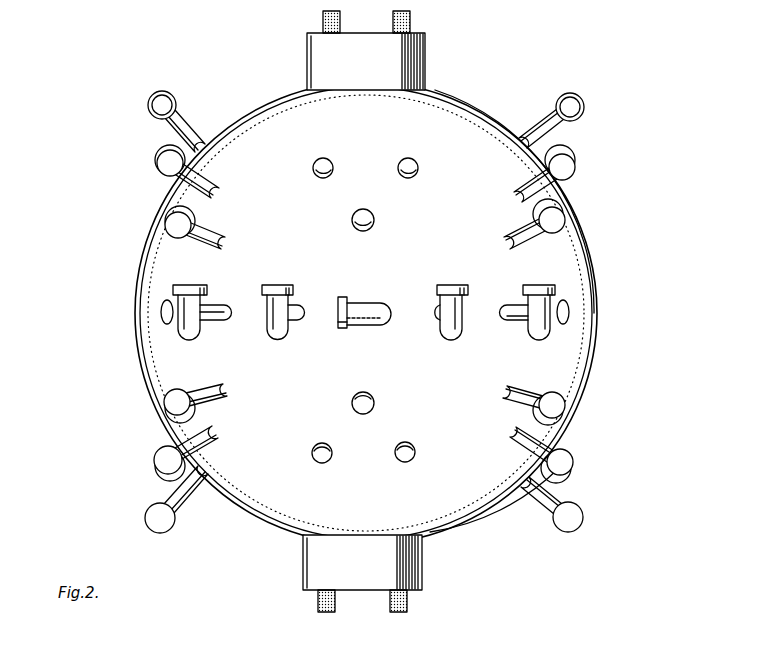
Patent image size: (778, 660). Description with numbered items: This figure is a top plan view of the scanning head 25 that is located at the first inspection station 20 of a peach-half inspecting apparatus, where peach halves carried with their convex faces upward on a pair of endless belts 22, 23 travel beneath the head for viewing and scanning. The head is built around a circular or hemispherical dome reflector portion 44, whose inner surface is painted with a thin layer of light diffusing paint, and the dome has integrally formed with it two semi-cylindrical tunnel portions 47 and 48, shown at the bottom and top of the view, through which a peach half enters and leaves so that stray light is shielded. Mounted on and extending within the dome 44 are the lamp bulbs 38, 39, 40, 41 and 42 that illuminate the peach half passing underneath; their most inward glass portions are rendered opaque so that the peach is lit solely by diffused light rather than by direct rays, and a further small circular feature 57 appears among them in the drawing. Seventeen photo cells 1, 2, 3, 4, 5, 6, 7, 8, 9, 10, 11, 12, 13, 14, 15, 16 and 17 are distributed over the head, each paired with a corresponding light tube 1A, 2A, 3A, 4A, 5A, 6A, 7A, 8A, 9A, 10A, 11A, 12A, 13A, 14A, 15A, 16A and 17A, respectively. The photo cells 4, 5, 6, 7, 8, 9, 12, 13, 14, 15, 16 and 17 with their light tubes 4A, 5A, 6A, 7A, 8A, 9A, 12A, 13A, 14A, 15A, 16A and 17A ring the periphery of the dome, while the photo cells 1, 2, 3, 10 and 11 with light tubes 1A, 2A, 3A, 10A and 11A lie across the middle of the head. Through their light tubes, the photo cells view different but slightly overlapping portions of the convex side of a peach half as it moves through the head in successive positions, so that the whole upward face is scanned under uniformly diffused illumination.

The inspection station 20 is at (392, 327).
The scanning head 25 is at (608, 275).
The dome reflector portion 44 is at (468, 512).
The semi-cylindrical tunnel portion 48 is at (412, 60).
The semi-cylindrical tunnel portion 47 is at (408, 565).
The endless belt 22 is at (328, 614).
The endless belt 23 is at (399, 614).
The lamp bulb 38 is at (326, 160).
The hole 57 is at (412, 164).
The lamp bulb 39 is at (368, 220).
The lamp bulb 40 is at (366, 401).
The lamp bulb 41 is at (322, 460).
The lamp bulb 42 is at (405, 460).
The photo cell 1 is at (342, 298).
The light tube 1A is at (372, 306).
The photo cell 2 is at (452, 293).
The light tube 2A is at (434, 320).
The photo cell 3 is at (538, 293).
The light tube 3A is at (516, 320).
The photo cell 10 is at (282, 340).
The light tube 10A is at (294, 308).
The photo cell 11 is at (192, 340).
The light tube 11A is at (212, 312).
The photo cell 4 is at (560, 408).
The light tube 4A is at (512, 390).
The photo cell 5 is at (566, 462).
The light tube 5A is at (520, 435).
The photo cell 6 is at (574, 517).
The light tube 6A is at (552, 495).
The photo cell 7 is at (556, 218).
The light tube 7A is at (525, 232).
The photo cell 8 is at (568, 167).
The light tube 8A is at (528, 185).
The photo cell 9 is at (576, 107).
The light tube 9A is at (540, 133).
The photo cell 12 is at (180, 420).
The light tube 12A is at (210, 398).
The photo cell 13 is at (160, 460).
The light tube 13A is at (214, 432).
The photo cell 14 is at (150, 518).
The light tube 14A is at (184, 505).
The photo cell 15 is at (172, 225).
The light tube 15A is at (210, 232).
The photo cell 16 is at (165, 162).
The light tube 16A is at (213, 190).
The photo cell 17 is at (158, 104).
The light tube 17A is at (188, 127).